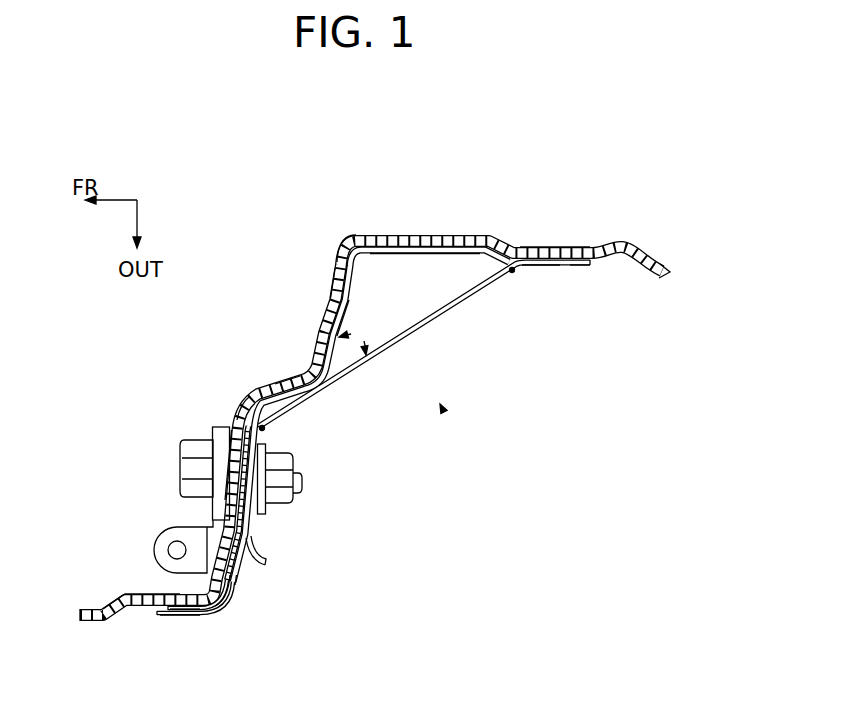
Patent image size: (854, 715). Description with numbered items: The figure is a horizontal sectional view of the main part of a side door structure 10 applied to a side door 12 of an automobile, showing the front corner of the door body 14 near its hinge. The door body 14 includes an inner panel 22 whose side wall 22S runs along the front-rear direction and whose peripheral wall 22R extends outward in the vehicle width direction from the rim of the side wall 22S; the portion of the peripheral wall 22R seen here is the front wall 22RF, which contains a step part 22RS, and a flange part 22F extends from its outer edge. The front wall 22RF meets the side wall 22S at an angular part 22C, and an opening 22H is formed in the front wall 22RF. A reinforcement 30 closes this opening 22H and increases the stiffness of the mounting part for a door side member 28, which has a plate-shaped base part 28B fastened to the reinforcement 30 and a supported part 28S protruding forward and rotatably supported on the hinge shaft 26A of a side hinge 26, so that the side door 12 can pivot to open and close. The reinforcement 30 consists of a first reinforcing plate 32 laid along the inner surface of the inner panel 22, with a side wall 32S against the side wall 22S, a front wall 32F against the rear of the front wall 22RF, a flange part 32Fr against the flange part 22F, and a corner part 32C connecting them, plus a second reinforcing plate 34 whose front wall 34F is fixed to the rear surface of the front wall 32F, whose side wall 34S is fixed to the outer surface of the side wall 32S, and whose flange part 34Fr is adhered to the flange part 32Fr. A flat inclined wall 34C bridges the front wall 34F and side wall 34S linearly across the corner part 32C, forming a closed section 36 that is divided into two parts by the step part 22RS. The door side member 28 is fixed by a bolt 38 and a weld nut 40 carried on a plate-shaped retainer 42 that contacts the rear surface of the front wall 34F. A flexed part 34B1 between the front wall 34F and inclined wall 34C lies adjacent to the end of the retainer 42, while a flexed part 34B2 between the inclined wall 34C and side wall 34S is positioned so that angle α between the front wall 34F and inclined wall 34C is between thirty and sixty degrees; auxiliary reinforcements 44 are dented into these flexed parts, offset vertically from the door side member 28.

The side door structure 10 is at (445, 414).
The side door 12 is at (354, 410).
The door body 14 is at (561, 218).
The inner panel 22 is at (477, 235).
The angular part 22C is at (345, 236).
The peripheral wall 22R is at (336, 262).
The step part 22RS is at (290, 381).
The front wall 22RF is at (244, 408).
The opening 22H is at (221, 422).
The side wall 22S is at (594, 247).
The flange part 22F is at (134, 607).
The side hinge 26 is at (130, 555).
The hinge shaft 26A is at (167, 552).
The door side member 28 is at (134, 477).
The base part 28B is at (212, 520).
The supported part 28S is at (172, 527).
The reinforcement 30 is at (412, 466).
The first reinforcing plate 32 is at (450, 258).
The corner part 32C is at (349, 254).
The side wall 32S is at (434, 257).
The front wall 32F is at (233, 579).
The flange part 32Fr is at (177, 617).
The second reinforcing plate 34 is at (482, 286).
The flexed part 34B1 is at (262, 397).
The flexed part 34B2 is at (523, 265).
The inclined wall 34C is at (417, 330).
The side wall 34S is at (588, 266).
The front wall 34F is at (226, 586).
The flange part 34Fr is at (193, 617).
The closed section 36 is at (410, 274).
The bolt 38 is at (303, 484).
The nut 40 is at (283, 507).
The retainer 42 is at (262, 560).
The auxiliary reinforcements 44 is at (268, 426).